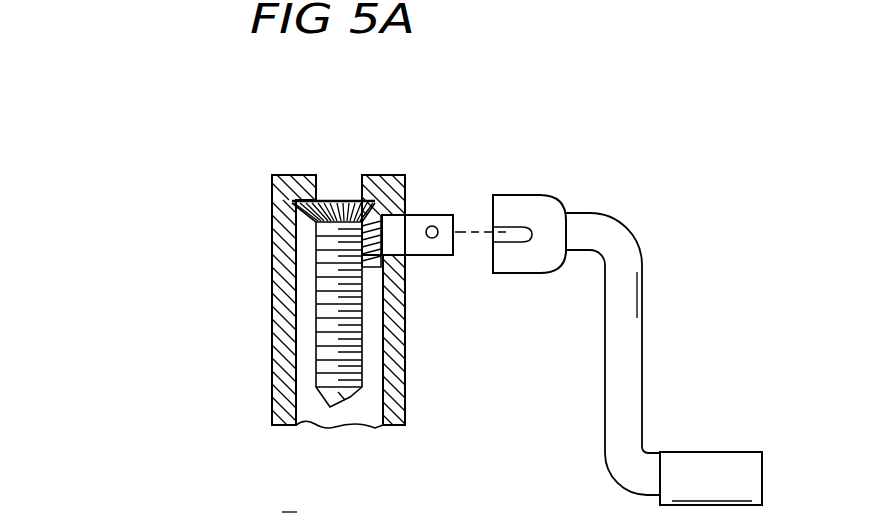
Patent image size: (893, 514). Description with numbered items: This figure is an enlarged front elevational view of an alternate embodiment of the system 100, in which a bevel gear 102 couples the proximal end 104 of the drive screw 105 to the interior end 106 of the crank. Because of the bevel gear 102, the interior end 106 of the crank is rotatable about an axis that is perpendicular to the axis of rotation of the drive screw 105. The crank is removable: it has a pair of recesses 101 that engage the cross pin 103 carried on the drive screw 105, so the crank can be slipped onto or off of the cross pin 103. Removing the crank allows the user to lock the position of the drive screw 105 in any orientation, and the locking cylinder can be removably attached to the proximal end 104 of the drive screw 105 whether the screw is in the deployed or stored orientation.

The system 100 is at (188, 234).
The recesses 101 is at (518, 242).
The bevel gear 102 is at (392, 180).
The cross pin 103 is at (436, 225).
The proximal end 104 is at (340, 185).
The drive screw 105 is at (418, 255).
The interior end 106 is at (493, 200).